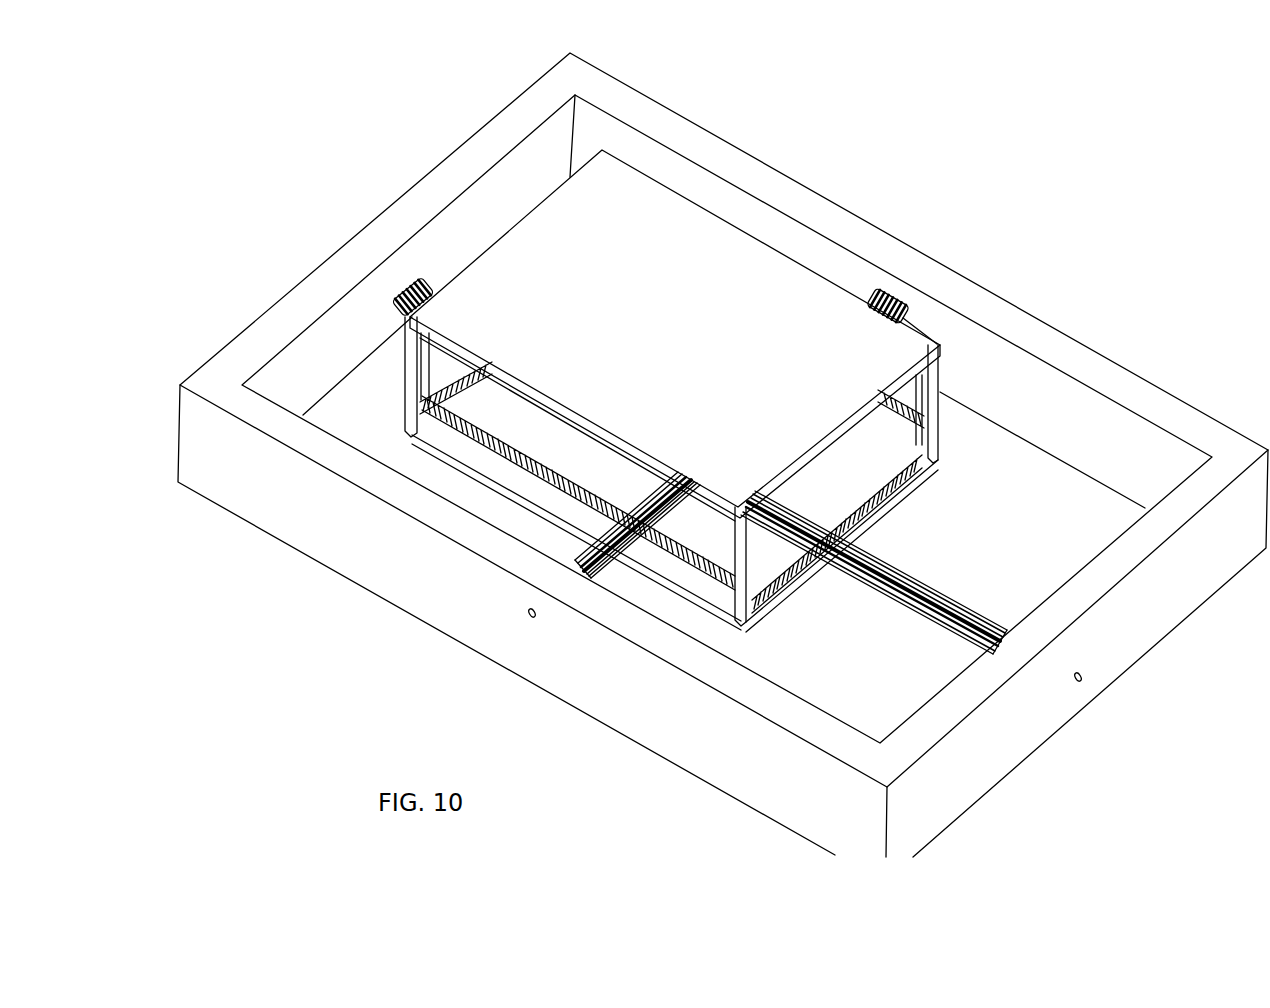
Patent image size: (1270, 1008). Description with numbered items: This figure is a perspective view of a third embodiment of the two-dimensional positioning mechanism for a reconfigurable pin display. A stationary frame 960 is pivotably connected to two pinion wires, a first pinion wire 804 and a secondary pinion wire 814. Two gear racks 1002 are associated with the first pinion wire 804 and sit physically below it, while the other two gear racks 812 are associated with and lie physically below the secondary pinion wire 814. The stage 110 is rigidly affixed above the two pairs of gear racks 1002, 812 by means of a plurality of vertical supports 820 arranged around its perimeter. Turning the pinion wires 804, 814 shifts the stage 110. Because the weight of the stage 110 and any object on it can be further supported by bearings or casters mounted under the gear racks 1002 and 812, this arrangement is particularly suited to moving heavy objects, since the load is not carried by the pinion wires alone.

The stationary frame 960 is at (775, 190).
The stage 110 is at (680, 334).
The vertical supports 820 is at (405, 385).
The gear racks 812 is at (443, 430).
The gear racks 1002 is at (486, 384).
The second pinion wire 814 is at (623, 571).
The first pinion wire 804 is at (887, 592).